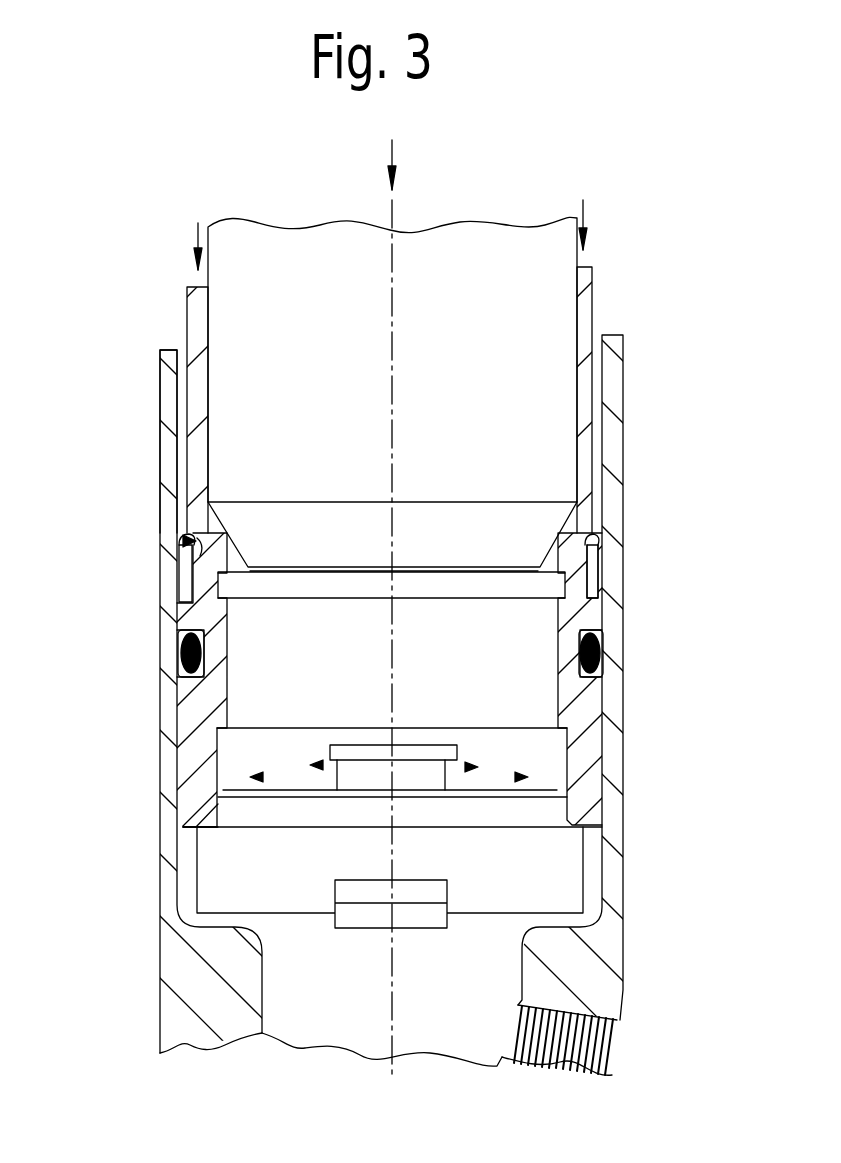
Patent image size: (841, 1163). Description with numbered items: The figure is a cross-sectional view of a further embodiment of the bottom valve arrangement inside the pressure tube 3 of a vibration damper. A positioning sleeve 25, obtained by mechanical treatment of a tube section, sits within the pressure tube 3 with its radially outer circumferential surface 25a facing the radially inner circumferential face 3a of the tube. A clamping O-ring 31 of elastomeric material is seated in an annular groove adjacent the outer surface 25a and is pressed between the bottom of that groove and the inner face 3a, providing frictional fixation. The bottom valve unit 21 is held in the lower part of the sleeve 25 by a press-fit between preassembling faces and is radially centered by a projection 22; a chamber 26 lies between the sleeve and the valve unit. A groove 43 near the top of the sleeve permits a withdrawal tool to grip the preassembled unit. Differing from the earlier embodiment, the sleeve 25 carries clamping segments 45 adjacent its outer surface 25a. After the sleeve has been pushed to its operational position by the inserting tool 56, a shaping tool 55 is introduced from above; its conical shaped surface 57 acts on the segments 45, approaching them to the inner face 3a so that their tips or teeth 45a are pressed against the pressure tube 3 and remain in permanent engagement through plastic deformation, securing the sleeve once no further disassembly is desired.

The pressure tube 3 is at (612, 810).
The radially inner circumferential face of the pressure tube 3a is at (188, 450).
The bottom valve unit 21 is at (560, 861).
The projection 22 is at (255, 810).
The positioning sleeve 25 is at (588, 742).
The radially outer circumferential surface 25a is at (177, 777).
The chamber 26 is at (236, 752).
The clamping O-ring 31 is at (600, 655).
The groove 43 is at (569, 583).
The clamping segments 45 is at (203, 541).
The tips or teeth 45a is at (185, 534).
The shaping tool 55 is at (481, 258).
The inserting tool 56 is at (578, 292).
The conical shaped surface 57 is at (518, 510).